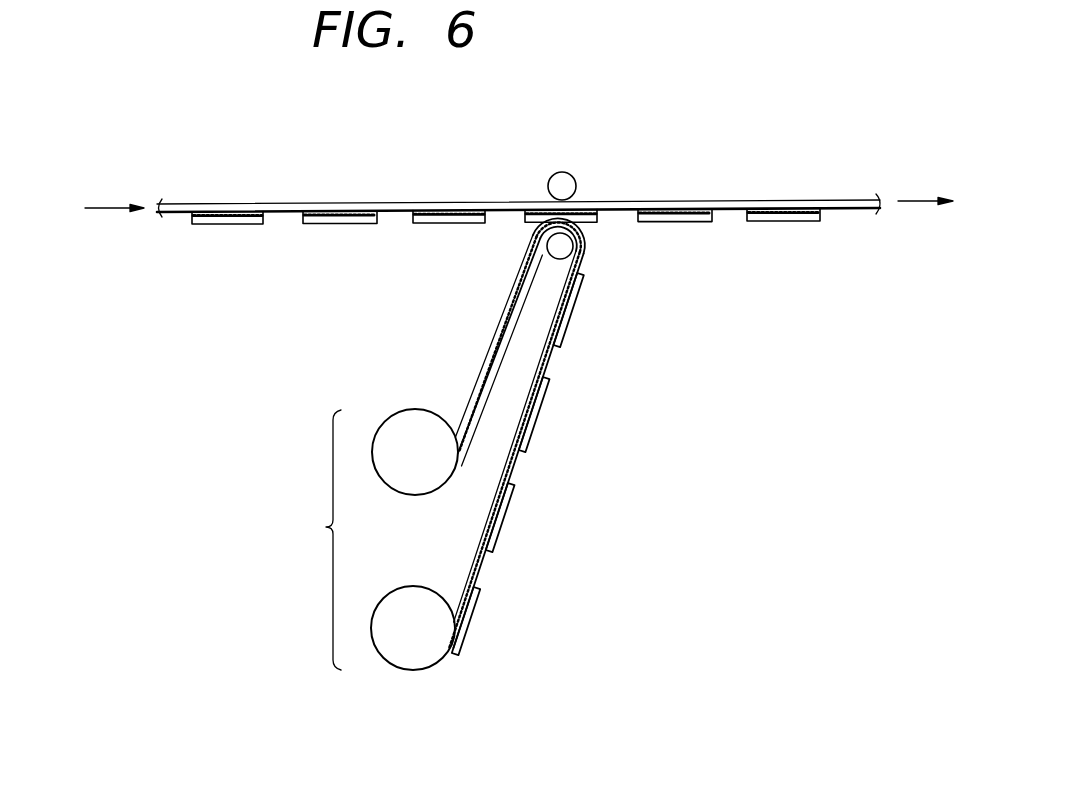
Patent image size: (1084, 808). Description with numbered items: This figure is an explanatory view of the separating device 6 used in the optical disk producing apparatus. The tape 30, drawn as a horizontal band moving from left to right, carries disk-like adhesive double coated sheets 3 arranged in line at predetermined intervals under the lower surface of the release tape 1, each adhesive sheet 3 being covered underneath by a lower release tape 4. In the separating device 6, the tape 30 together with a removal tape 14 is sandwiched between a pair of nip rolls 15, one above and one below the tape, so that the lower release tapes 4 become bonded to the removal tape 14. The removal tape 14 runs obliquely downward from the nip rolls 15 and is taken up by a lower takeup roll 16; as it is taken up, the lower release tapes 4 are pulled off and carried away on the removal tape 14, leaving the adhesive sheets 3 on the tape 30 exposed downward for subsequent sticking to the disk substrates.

The release tape 1 is at (400, 205).
The tape 30 is at (290, 205).
The adhesive double coated sheet 3 is at (685, 218).
The lower release tape 4 is at (330, 225).
The nip rolls 15 is at (566, 252).
The removal tape 14 is at (485, 368).
The separating device 6 is at (386, 571).
The lower takeup roll 16 is at (416, 665).